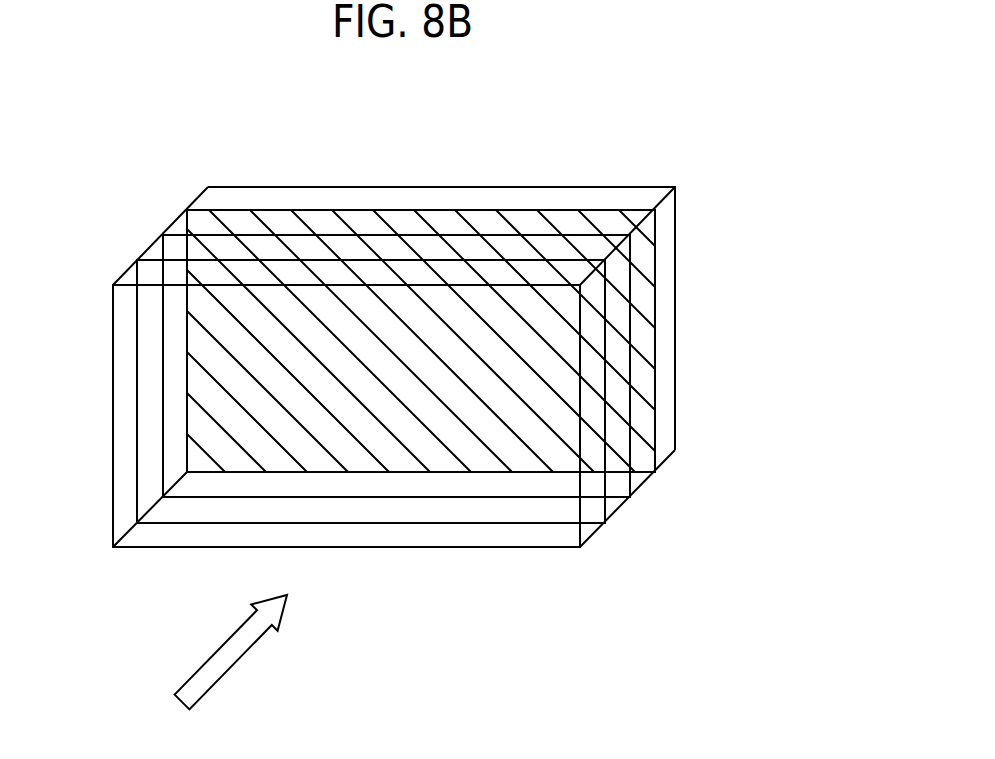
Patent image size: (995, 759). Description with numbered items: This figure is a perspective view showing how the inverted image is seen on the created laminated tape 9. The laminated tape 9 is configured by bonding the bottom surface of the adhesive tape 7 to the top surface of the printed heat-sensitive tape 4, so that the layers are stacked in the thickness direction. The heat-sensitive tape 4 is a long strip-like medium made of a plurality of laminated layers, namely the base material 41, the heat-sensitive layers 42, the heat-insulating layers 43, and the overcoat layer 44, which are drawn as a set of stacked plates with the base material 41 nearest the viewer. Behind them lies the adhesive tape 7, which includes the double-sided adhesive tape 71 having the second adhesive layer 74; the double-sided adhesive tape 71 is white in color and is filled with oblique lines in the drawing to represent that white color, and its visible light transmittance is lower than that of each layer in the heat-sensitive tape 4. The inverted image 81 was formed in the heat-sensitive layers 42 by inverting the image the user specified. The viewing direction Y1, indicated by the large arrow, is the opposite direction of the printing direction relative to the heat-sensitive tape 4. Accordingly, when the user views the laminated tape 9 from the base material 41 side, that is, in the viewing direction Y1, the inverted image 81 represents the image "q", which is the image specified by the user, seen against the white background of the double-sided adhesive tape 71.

The laminated tape 9 is at (677, 127).
The heat-sensitive tape 4 is at (768, 268).
The base material 41 is at (592, 462).
The heat-sensitive layers 42 is at (620, 411).
The heat-insulating layers 43 is at (620, 358).
The overcoat layer 44 is at (620, 299).
The adhesive tape 7 is at (417, 108).
The second adhesive layer 74 is at (292, 200).
The double-sided adhesive tape 71 is at (357, 223).
The inverted image 81 is at (428, 403).
The viewing direction Y1 is at (202, 667).